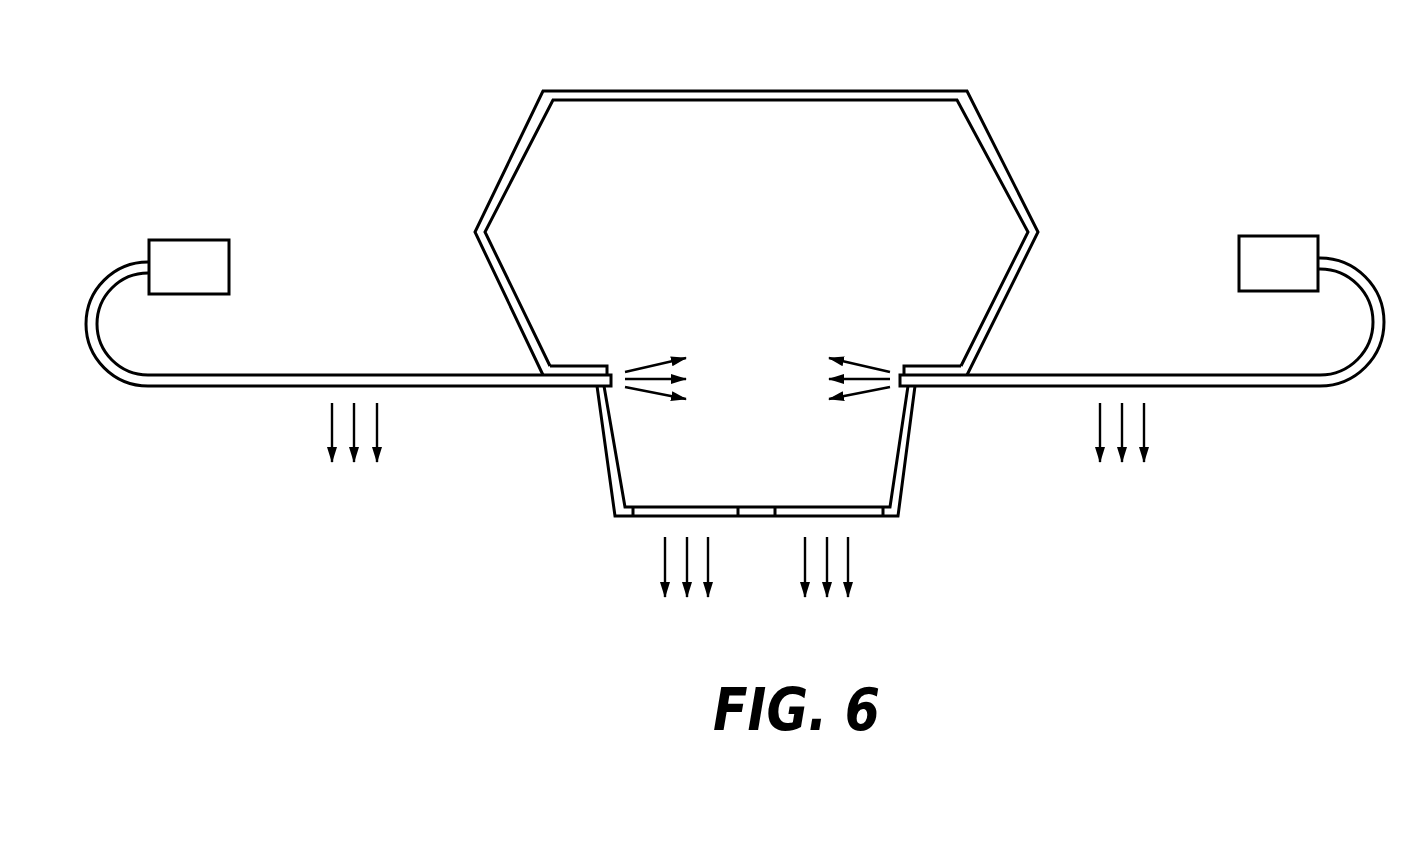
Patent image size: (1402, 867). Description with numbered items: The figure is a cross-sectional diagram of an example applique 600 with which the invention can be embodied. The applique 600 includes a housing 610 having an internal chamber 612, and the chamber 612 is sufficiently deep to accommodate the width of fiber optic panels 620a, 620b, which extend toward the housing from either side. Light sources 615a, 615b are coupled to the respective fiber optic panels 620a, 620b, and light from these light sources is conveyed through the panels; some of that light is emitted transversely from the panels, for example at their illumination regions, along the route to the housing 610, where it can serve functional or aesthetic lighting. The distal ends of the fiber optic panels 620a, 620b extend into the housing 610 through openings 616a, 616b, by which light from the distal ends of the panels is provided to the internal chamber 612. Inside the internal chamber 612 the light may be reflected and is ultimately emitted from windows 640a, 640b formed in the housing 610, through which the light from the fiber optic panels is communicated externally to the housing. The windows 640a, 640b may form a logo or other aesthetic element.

The applique 600 is at (366, 122).
The housing 610 is at (790, 90).
The internal chamber 612 is at (726, 276).
The light source 615a is at (197, 238).
The light source 615b is at (1276, 236).
The fiber optic panel 620a is at (383, 374).
The fiber optic panel 620b is at (1124, 374).
The opening 616a is at (613, 388).
The opening 616b is at (900, 388).
The window 640a is at (711, 505).
The window 640b is at (815, 505).